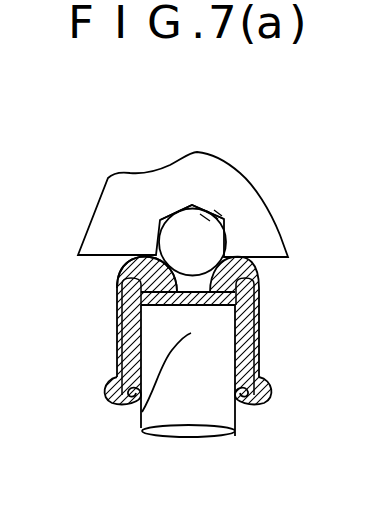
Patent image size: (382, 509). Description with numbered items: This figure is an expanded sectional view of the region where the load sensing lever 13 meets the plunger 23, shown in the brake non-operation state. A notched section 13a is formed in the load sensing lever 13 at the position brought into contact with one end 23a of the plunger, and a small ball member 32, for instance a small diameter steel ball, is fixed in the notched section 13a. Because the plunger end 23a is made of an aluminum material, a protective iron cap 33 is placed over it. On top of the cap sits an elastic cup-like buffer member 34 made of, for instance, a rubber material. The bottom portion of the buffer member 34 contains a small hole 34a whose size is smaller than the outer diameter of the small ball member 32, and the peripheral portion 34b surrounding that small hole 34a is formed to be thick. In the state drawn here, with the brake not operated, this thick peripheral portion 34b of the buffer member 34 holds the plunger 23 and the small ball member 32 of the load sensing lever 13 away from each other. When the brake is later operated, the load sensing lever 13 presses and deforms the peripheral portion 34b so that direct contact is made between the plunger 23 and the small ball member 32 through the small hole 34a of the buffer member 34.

The load sensing lever 13 is at (238, 180).
The notched section 13a is at (200, 212).
The small ball member 32 is at (172, 235).
The buffer member 34 is at (255, 306).
The small hole 34a is at (175, 310).
The peripheral portion 34b is at (150, 272).
The protective iron cap 33 is at (257, 357).
The plunger 23 is at (198, 408).
The plunger end 23a is at (142, 412).